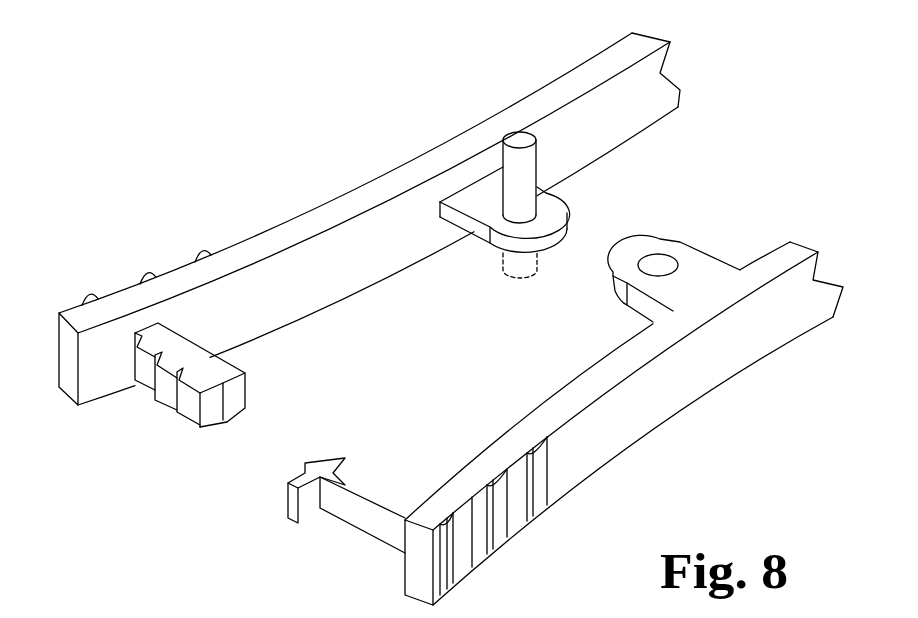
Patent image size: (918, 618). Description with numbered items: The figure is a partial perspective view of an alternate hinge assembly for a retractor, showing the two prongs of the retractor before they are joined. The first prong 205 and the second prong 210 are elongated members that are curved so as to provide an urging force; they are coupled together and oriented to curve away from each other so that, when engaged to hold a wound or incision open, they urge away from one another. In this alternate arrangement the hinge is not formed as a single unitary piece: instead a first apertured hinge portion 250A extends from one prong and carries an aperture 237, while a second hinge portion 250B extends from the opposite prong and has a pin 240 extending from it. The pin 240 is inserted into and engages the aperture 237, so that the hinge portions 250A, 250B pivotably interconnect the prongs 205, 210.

The first prong 205 is at (674, 405).
The second prong 210 is at (289, 199).
The aperture 237 is at (658, 260).
The pin 240 is at (515, 128).
The first apertured hinge portion 250A is at (581, 321).
The second hinge portion 250B is at (466, 278).